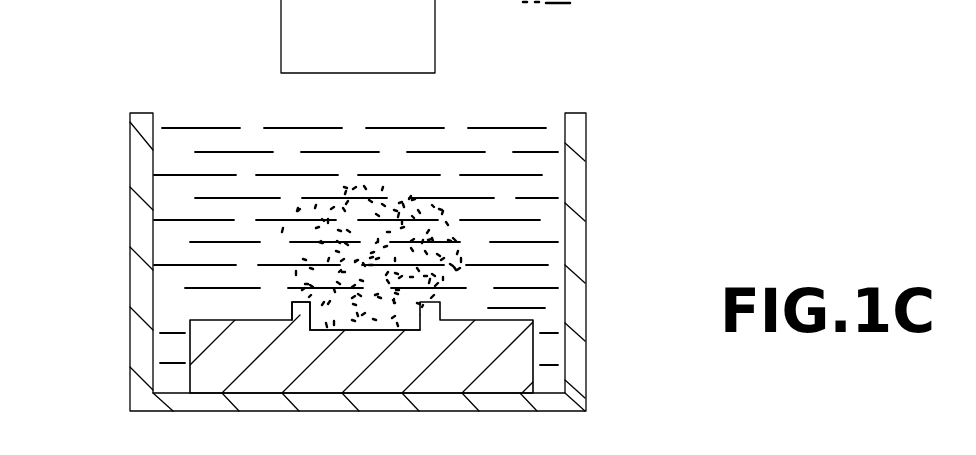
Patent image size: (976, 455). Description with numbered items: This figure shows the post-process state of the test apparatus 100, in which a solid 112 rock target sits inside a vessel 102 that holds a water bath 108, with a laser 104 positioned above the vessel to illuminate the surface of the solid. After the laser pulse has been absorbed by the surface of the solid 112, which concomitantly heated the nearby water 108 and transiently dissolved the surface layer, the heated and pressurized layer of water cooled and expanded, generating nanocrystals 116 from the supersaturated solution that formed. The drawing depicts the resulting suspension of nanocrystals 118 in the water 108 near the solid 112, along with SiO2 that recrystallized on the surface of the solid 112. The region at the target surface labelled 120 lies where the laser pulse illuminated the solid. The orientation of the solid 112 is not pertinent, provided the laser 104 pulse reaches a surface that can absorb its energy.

The test apparatus 100 is at (727, 110).
The vessel 102 is at (586, 178).
The laser 104 is at (437, 46).
The water bath 108 is at (172, 233).
The solid 112 is at (510, 373).
The nanocrystals 116 is at (295, 312).
The nanocrystals 118 is at (388, 242).
The ablation surface 120 is at (377, 328).